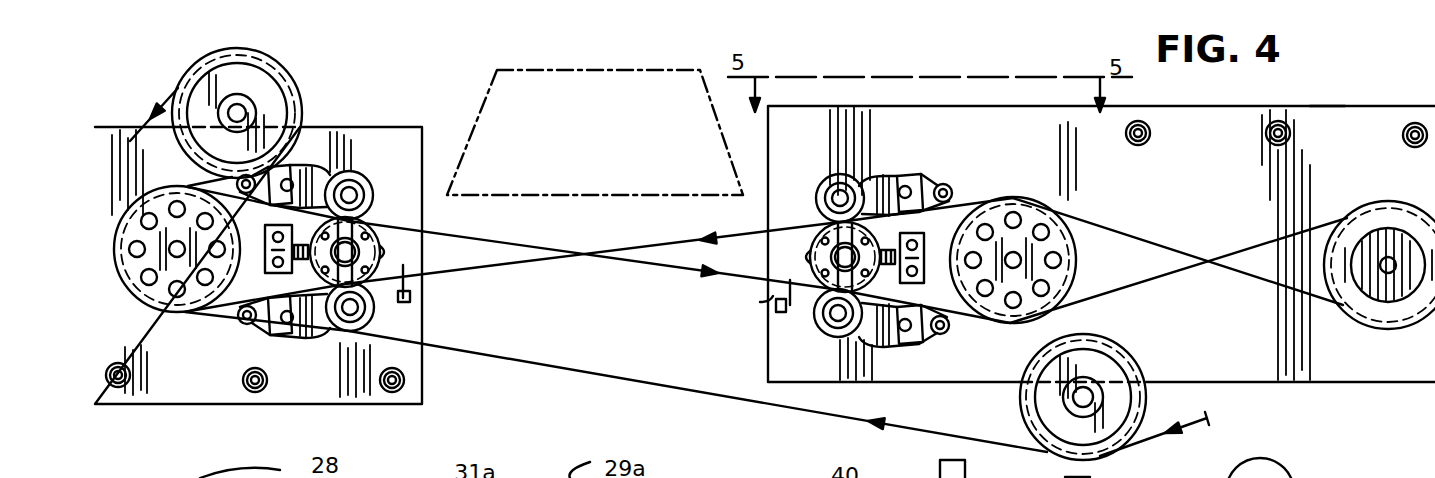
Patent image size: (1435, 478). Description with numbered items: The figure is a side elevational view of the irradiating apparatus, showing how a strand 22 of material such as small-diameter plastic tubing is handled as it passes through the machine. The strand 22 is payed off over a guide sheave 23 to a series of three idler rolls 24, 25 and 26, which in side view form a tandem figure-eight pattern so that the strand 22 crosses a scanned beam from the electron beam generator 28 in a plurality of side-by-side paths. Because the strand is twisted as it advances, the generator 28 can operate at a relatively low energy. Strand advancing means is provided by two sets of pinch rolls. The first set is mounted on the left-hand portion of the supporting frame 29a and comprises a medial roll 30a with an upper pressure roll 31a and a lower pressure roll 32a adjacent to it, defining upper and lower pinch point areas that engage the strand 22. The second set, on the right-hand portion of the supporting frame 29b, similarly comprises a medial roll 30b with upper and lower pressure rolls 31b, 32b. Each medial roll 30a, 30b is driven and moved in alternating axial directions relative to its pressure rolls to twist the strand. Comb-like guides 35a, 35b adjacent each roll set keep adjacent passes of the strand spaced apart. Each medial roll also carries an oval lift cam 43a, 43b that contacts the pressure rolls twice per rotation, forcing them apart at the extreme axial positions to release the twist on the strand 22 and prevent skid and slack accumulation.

The strand 22 is at (630, 268).
The guide sheave 23 is at (1130, 358).
The idler roll 24 is at (140, 300).
The idler roll 25 is at (1053, 200).
The idler roll 26 is at (1428, 212).
The electron beam generator 28 is at (556, 70).
The supporting frame 29a is at (320, 130).
The supporting frame 29b is at (1327, 112).
The medial roll 30a is at (368, 200).
The medial roll 30b is at (805, 216).
The upper pressure roll 31a is at (348, 172).
The upper pressure roll 31b is at (817, 198).
The lower pressure roll 32a is at (378, 314).
The lower pressure roll 32b is at (822, 330).
The comb-like guide 35a is at (413, 280).
The comb-like guide 35b is at (778, 310).
The lift cam 43a is at (375, 219).
The lift cam 43b is at (805, 258).